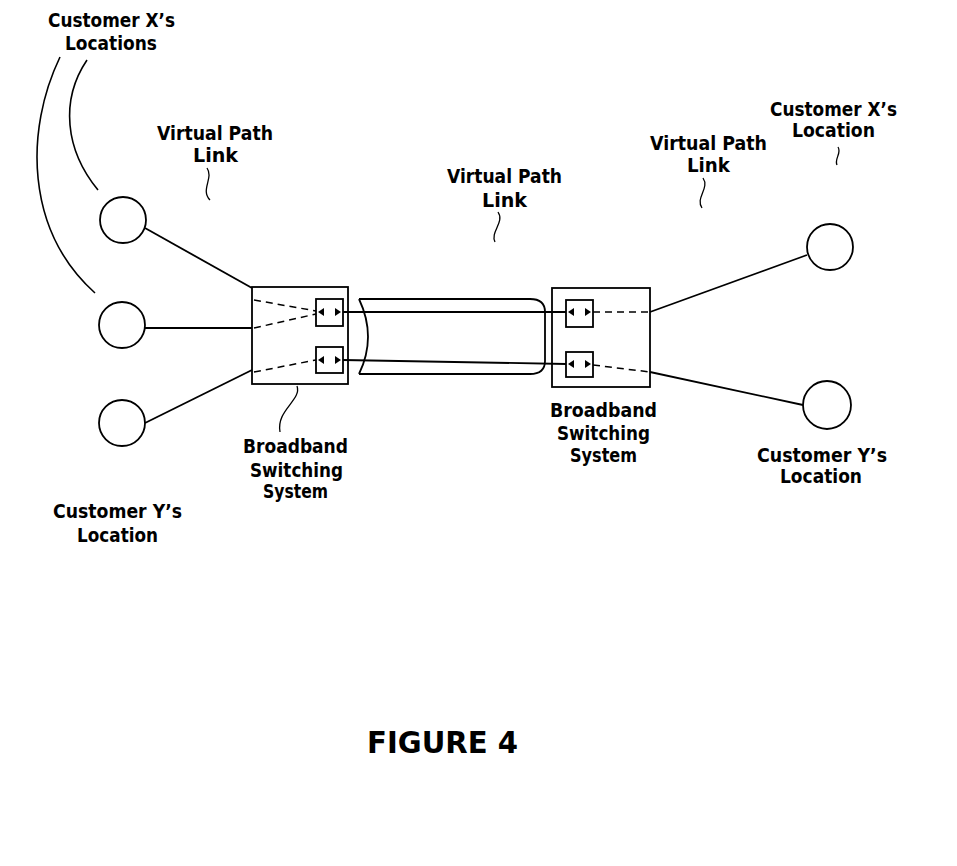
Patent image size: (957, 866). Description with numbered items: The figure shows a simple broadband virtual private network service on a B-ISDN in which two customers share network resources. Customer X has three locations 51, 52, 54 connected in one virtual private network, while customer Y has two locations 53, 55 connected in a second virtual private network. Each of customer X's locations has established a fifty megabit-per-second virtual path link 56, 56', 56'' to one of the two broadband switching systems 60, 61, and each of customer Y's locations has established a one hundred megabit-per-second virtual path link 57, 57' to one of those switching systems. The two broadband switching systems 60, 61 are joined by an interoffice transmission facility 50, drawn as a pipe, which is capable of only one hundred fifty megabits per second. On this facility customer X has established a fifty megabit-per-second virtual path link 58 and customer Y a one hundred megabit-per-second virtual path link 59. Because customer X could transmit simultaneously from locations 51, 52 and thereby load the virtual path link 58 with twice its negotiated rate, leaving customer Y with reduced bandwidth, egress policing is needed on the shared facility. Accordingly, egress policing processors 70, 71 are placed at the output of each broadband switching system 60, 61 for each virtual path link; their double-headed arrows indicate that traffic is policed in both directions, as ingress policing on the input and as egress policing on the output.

The transmission facility 50 is at (437, 298).
The customer X's location 51 is at (122, 197).
The customer X's location 52 is at (99, 325).
The customer Y's location 53 is at (122, 447).
The customer X's location 54 is at (836, 224).
The customer Y's location 55 is at (826, 381).
The virtual path link 56 is at (198, 248).
The virtual path link 56' is at (198, 296).
The virtual path link 56'' is at (728, 270).
The virtual path link 57 is at (198, 413).
The virtual path link 57' is at (726, 368).
The virtual path link 58 is at (494, 311).
The virtual path link 59 is at (447, 374).
The broadband switching system 60 is at (318, 286).
The broadband switching system 61 is at (618, 288).
The egress policing processor 70 is at (332, 374).
The egress policing processor 71 is at (563, 300).